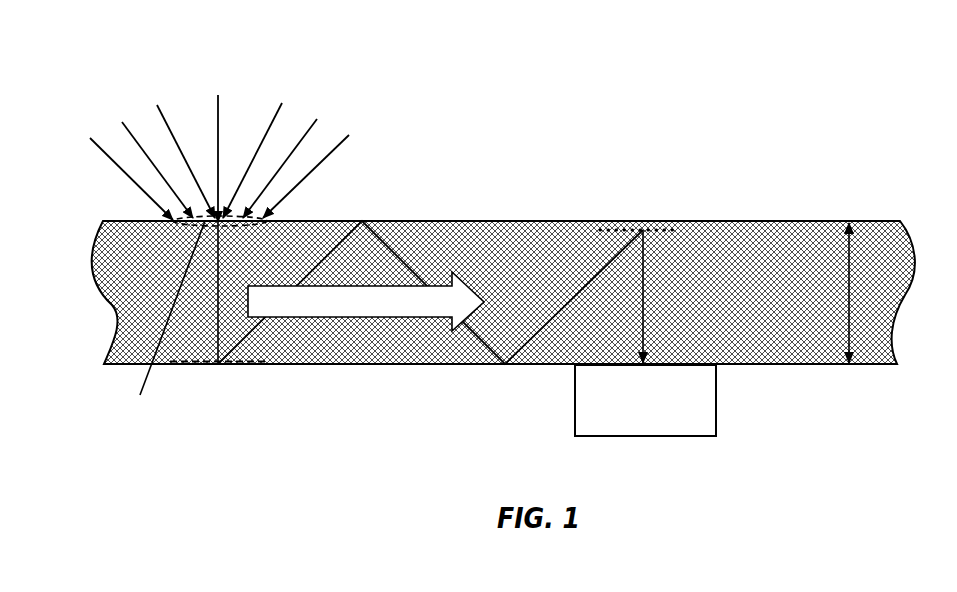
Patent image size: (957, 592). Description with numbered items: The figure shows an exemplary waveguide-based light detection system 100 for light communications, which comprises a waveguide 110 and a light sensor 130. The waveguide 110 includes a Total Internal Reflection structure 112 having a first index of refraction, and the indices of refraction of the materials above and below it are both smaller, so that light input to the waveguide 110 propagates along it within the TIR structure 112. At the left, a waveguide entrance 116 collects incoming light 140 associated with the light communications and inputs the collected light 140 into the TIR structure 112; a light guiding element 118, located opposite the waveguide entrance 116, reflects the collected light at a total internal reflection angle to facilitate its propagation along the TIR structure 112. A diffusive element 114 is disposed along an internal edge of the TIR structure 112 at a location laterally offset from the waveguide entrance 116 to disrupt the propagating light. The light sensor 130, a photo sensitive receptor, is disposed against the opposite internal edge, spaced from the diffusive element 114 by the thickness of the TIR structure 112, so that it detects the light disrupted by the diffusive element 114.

The light detection system 100 is at (661, 71).
The waveguide 110 is at (398, 365).
The Total Internal Reflection (TIR) structure 112 is at (460, 247).
The diffusive element 114 is at (622, 230).
The waveguide entrance 116 is at (163, 324).
The light guiding element 118 is at (245, 365).
The light sensor 130 is at (645, 400).
The light 140 is at (324, 78).